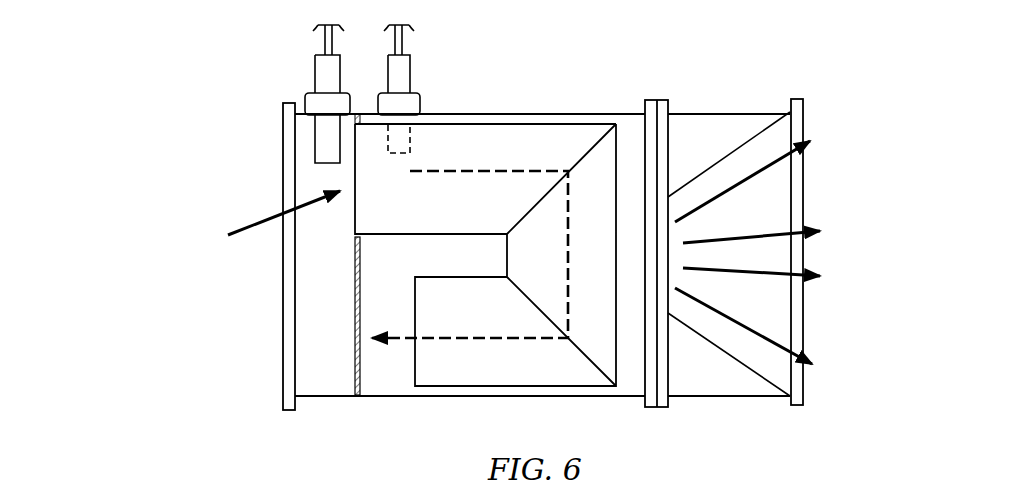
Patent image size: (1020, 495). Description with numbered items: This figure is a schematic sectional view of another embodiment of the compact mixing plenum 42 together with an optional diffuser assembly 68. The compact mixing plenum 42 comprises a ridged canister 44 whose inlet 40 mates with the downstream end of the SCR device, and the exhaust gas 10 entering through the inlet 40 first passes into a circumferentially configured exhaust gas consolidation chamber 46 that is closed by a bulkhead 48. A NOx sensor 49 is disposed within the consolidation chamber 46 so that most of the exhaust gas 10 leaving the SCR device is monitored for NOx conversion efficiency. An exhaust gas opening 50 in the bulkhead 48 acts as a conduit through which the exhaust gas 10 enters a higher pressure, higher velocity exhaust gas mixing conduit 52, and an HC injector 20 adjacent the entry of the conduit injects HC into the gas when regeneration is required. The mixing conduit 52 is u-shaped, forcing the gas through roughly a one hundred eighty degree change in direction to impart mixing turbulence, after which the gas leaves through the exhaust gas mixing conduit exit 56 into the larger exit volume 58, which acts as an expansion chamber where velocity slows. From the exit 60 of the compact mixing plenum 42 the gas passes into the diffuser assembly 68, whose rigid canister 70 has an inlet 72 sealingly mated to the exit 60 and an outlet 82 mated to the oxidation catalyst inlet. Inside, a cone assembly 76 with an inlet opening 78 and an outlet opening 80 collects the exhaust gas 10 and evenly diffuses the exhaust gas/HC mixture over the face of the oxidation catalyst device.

The exhaust gas 10 is at (281, 214).
The HC injector 20 is at (412, 138).
The inlet 40 is at (283, 163).
The compact mixing plenum 42 is at (549, 78).
The ridged canister 44 is at (502, 397).
The exhaust gas consolidation chamber 46 is at (325, 353).
The bulkhead 48 is at (354, 300).
The NOx sensor 49 is at (315, 136).
The exhaust gas opening 50 is at (354, 213).
The exhaust gas mixing conduit 52 is at (533, 118).
The exhaust gas mixing conduit exit 56 is at (415, 363).
The exit volume 58 is at (283, 393).
The exit 60 is at (661, 164).
The diffuser assembly 68 is at (790, 88).
The rigid canister 70 is at (731, 108).
The inlet 72 is at (658, 113).
The cone assembly 76 is at (722, 350).
The inlet opening 78 is at (657, 295).
The outlet opening 80 is at (767, 134).
The outlet 82 is at (791, 382).